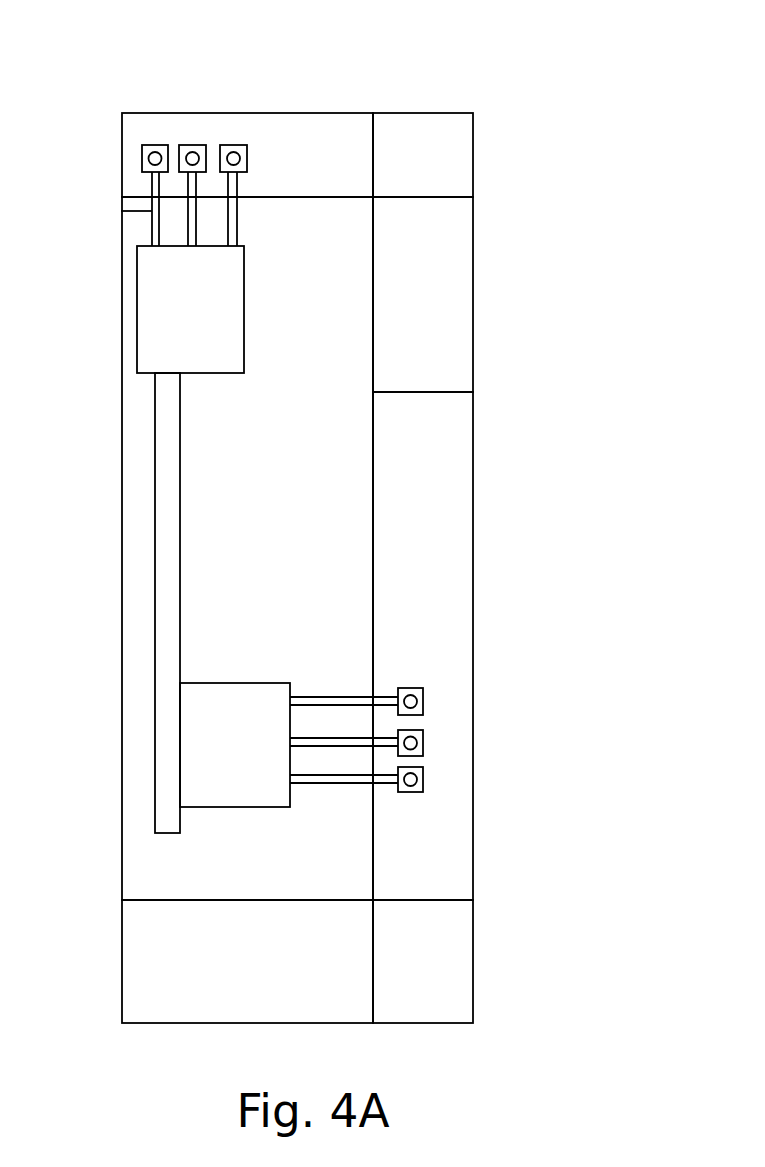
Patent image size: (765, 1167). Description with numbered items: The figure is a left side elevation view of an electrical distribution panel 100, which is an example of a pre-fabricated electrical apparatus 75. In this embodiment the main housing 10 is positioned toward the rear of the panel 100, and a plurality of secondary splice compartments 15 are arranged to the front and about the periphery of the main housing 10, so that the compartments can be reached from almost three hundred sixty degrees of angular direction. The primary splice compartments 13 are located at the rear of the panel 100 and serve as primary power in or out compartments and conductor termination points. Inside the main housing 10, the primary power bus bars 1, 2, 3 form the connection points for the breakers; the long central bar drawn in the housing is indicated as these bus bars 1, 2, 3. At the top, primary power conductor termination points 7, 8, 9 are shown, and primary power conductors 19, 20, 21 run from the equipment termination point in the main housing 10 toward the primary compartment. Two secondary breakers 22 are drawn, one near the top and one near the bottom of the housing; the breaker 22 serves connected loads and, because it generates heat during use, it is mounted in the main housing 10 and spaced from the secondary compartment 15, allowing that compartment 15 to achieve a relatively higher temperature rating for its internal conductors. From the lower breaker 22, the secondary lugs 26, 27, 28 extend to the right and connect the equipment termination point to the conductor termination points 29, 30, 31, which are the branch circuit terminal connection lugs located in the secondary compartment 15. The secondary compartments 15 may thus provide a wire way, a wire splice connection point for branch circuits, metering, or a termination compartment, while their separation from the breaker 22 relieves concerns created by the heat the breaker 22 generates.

The primary power bus bar 1 is at (196, 456).
The primary power bus bar 2 is at (231, 603).
The primary power bus bar 3 is at (231, 603).
The primary power conductor termination point 7 is at (155, 145).
The primary power conductor termination point 8 is at (191, 145).
The primary power conductor termination point 9 is at (234, 145).
The main housing 10 is at (202, 547).
The primary splice compartment 13 is at (305, 167).
The secondary splice compartment 15 is at (410, 159).
The primary power conductor 19 is at (121, 211).
The primary power conductor 20 is at (193, 232).
The primary power conductor 21 is at (240, 215).
The secondary breaker 22 is at (174, 322).
The secondary lug 26 is at (340, 697).
The secondary lug 27 is at (330, 747).
The secondary lug 28 is at (359, 783).
The conductor termination point 29 is at (423, 701).
The conductor termination point 30 is at (423, 745).
The conductor termination point 31 is at (423, 785).
The pre-fabricated electrical apparatus 75 is at (382, 67).
The electrical distribution panel 100 is at (292, 607).